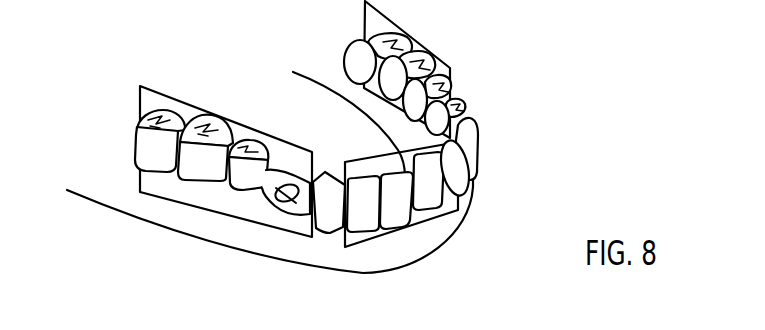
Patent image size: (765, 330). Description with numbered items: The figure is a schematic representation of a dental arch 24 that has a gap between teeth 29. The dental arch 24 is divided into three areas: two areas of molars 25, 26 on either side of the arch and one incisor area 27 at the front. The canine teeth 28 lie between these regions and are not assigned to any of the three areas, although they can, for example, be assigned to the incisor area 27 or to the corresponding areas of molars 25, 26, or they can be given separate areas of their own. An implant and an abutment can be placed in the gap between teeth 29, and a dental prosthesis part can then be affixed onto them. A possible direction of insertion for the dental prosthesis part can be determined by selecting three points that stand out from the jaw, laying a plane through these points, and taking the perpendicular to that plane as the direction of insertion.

The dental arch 24 is at (598, 78).
The area of molars 25 is at (172, 193).
The area of molars 26 is at (415, 53).
The incisor area 27 is at (418, 214).
The canine teeth 28 is at (473, 140).
The gap between teeth 29 is at (284, 202).